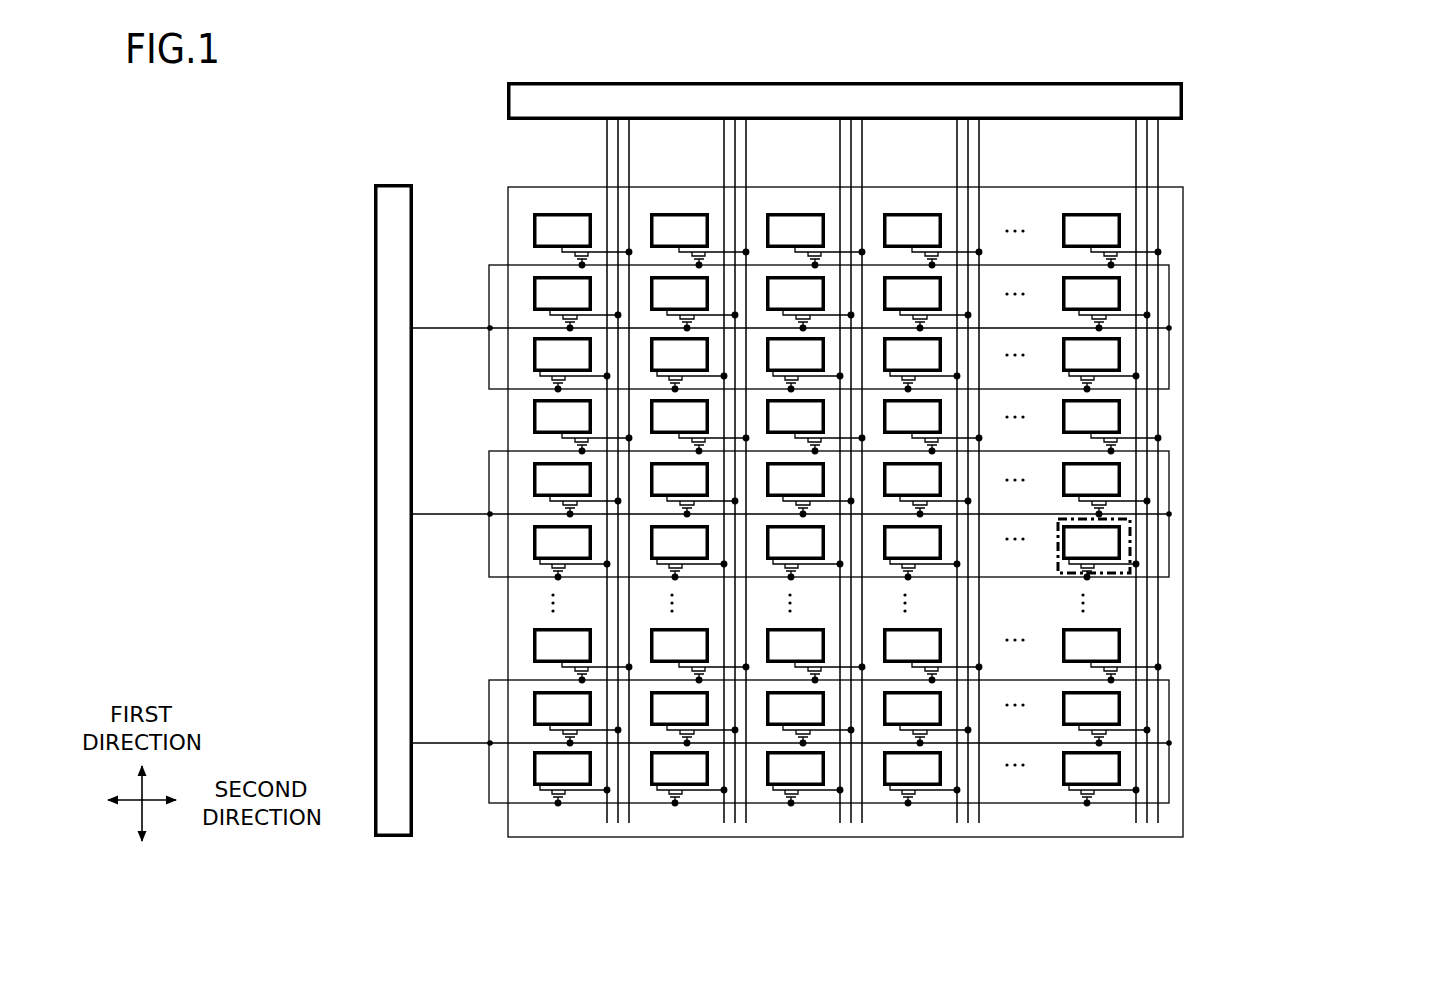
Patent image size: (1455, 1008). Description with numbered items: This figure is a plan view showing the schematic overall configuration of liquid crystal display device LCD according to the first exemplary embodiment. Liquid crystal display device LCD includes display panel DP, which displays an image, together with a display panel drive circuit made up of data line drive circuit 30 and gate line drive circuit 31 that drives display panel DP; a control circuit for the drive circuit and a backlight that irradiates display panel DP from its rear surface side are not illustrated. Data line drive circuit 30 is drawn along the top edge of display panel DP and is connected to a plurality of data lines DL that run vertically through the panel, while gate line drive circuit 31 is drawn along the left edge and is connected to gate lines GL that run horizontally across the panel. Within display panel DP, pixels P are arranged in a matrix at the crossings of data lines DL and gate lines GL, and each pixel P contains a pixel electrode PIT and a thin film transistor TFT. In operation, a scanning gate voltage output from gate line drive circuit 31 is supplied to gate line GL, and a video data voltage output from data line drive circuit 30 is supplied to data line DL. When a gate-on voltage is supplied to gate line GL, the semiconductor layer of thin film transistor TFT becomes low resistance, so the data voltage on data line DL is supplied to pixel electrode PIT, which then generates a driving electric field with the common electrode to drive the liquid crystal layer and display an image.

The data line drive circuit 30 is at (1190, 108).
The gate line drive circuit 31 is at (395, 182).
The display panel DP is at (753, 837).
The data line DL is at (859, 471).
The gate line GL is at (792, 534).
The pixel P is at (1050, 553).
The thin film transistor TFT is at (899, 808).
The pixel electrode PIT is at (1058, 779).
The liquid crystal display device LCD is at (1363, 266).